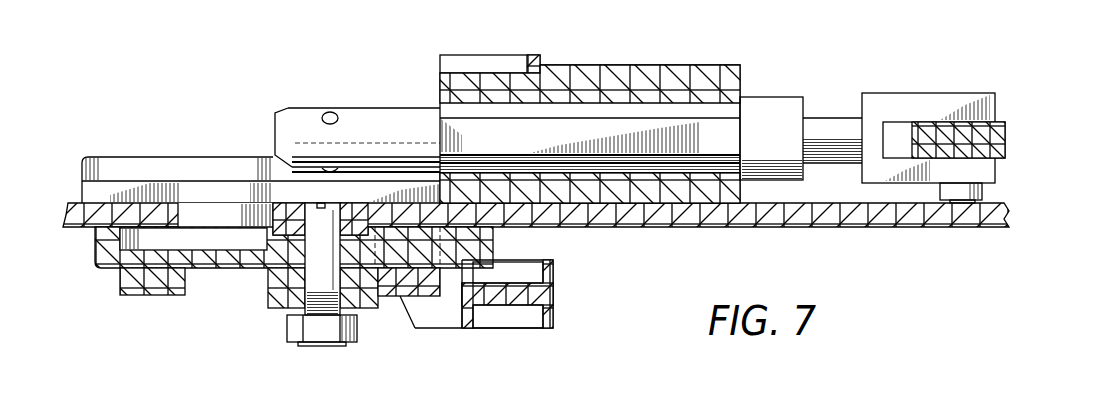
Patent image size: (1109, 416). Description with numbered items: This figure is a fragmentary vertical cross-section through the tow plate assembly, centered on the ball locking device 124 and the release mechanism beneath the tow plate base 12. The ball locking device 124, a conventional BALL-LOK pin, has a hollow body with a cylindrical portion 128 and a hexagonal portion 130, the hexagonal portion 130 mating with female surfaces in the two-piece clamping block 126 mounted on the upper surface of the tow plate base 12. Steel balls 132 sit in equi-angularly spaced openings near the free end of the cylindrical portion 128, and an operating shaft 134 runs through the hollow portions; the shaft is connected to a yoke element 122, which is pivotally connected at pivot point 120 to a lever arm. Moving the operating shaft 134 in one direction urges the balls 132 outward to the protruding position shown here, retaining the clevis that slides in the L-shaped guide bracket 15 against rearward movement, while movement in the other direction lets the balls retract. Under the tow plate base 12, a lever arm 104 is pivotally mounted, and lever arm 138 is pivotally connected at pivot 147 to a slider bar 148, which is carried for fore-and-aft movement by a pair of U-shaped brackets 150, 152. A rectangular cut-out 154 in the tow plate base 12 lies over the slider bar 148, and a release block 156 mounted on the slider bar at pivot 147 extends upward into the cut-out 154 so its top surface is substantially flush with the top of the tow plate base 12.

The tow plate base 12 is at (682, 216).
The L-shaped guide bracket 15 is at (121, 167).
The lever arm 104 is at (557, 304).
The pivot point 120 is at (965, 205).
The yoke element 122 is at (886, 105).
The ball locking device 124 is at (361, 64).
The two-piece clamping block 126 is at (621, 109).
The cylindrical portion 128 is at (393, 130).
The hexagonal portion 130 is at (570, 132).
The steel balls 132 is at (327, 112).
The operating shaft 134 is at (825, 130).
The lever arm 138 is at (270, 300).
The pivot 147 is at (316, 343).
The slider bar 148 is at (229, 258).
The U-shaped bracket 150 is at (155, 287).
The U-shaped bracket 152 is at (403, 282).
The rectangular cut-out 154 is at (200, 210).
The release block 156 is at (279, 212).